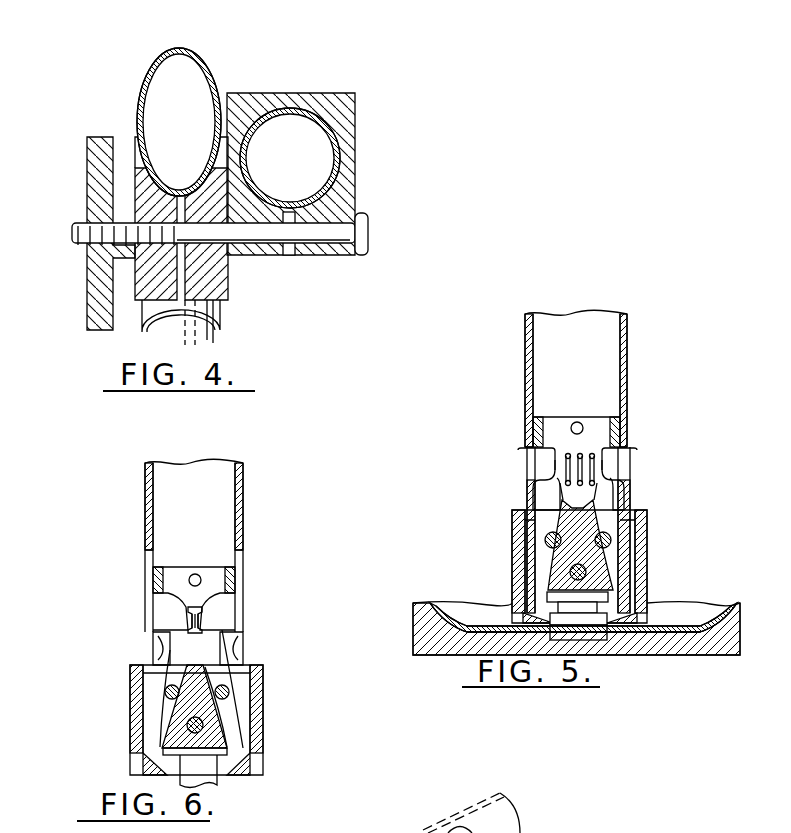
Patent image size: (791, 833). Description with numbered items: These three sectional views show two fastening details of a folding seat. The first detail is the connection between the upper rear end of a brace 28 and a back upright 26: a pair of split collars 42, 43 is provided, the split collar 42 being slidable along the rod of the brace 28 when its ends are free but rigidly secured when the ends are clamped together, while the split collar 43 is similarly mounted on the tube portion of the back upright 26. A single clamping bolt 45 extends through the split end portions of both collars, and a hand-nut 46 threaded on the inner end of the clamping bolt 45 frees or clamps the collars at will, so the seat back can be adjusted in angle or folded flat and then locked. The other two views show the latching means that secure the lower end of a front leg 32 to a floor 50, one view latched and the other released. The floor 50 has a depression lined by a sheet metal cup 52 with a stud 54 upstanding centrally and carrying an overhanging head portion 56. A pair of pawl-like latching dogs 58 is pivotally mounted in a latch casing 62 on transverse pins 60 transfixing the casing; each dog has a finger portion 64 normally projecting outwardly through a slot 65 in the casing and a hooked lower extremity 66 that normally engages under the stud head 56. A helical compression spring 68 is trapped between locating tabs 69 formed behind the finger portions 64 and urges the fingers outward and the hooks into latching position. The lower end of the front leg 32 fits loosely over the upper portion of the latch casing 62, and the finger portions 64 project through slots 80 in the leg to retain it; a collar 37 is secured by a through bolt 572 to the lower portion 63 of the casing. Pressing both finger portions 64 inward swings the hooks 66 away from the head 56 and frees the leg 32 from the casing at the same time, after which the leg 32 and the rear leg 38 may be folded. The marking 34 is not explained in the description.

In FIG. 4, the back upright 26 is at (310, 133).
In FIG. 4, the brace 28 is at (207, 63).
In FIG. 6, the front leg 32 is at (145, 510).
In FIG. 5, the front leg 32 is at (525, 353).
In FIG. 5, the direction of insertion 34 is at (516, 491).
In FIG. 6, the collar 37 is at (260, 667).
In FIG. 5, the collar 37 is at (517, 522).
In FIG. 5, the leg 38 is at (494, 800).
In FIG. 4, the split collar 42 is at (224, 291).
In FIG. 4, the split collar 43 is at (267, 110).
In FIG. 4, the clamping bolt 45 is at (72, 229).
In FIG. 4, the hand-nut 46 is at (92, 170).
In FIG. 5, the floor 50 is at (413, 603).
In FIG. 5, the sheet metal cup 52 is at (457, 604).
In FIG. 5, the stud 54 is at (553, 617).
In FIG. 6, the overhanging head portion 56 is at (237, 748).
In FIG. 5, the overhanging head portion 56 is at (607, 597).
In FIG. 6, the latching dog 58 is at (153, 707).
In FIG. 5, the latching dog 58 is at (617, 558).
In FIG. 6, the pin 60 is at (168, 692).
In FIG. 5, the pin 60 is at (547, 540).
In FIG. 6, the latch casing 62 is at (155, 583).
In FIG. 5, the latch casing 62 is at (622, 428).
In FIG. 6, the lower portion of latch casing 63 is at (195, 678).
In FIG. 5, the lower portion of latch casing 63 is at (580, 520).
In FIG. 6, the finger portion 64 is at (158, 610).
In FIG. 5, the finger portion 64 is at (527, 463).
In FIG. 6, the slot 65 is at (157, 642).
In FIG. 5, the slot 65 is at (535, 433).
In FIG. 6, the hooked lower extremity 66 is at (160, 753).
In FIG. 5, the hooked lower extremity 66 is at (607, 600).
In FIG. 6, the helical compression spring 68 is at (190, 607).
In FIG. 5, the helical compression spring 68 is at (568, 457).
In FIG. 6, the locating tab 69 is at (200, 617).
In FIG. 5, the locating tab 69 is at (587, 457).
In FIG. 6, the slot 80 is at (145, 563).
In FIG. 5, the slot 80 is at (528, 445).
In FIG. 6, the through bolt 572 is at (190, 725).
In FIG. 5, the through bolt 572 is at (573, 572).